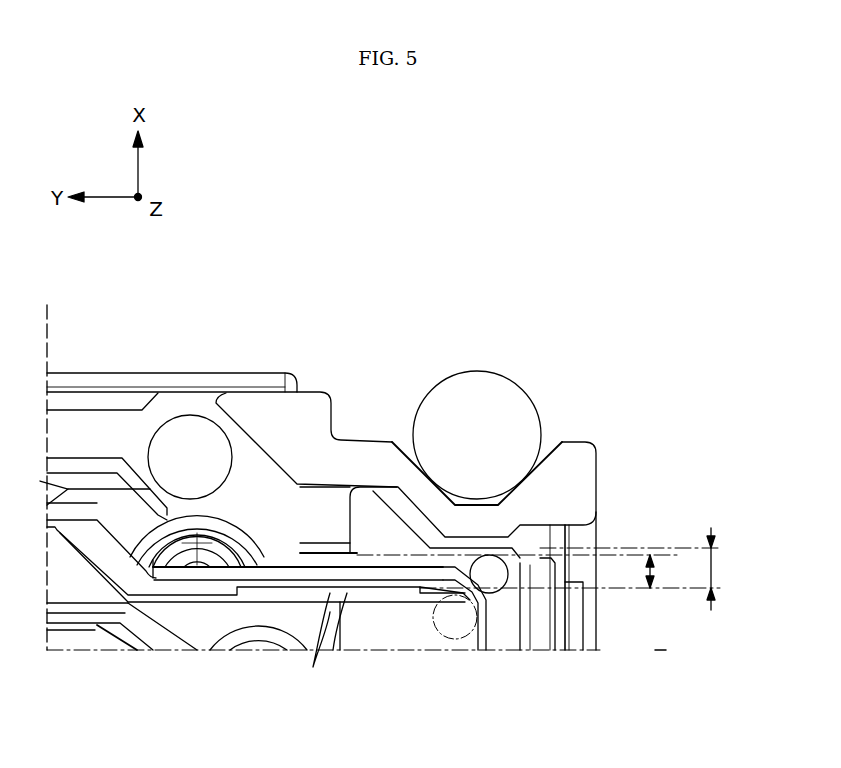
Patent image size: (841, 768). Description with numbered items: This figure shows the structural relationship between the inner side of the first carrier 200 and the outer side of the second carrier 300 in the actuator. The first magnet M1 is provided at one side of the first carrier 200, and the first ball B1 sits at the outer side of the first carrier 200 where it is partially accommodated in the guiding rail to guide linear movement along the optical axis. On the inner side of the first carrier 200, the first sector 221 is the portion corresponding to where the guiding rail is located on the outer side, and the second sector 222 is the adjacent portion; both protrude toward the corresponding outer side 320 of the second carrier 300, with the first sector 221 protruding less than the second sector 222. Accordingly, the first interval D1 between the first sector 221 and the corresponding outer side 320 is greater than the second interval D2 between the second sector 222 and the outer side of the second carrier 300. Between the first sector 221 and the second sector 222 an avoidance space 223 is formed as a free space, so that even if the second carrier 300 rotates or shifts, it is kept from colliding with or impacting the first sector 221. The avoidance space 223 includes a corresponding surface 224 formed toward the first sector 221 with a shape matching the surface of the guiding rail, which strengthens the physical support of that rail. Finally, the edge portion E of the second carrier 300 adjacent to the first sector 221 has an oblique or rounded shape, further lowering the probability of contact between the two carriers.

The first carrier 200 is at (112, 425).
The first magnet M1 is at (203, 378).
The second sector 222 is at (313, 550).
The avoidance space 223 is at (360, 522).
The corresponding surface 224 is at (403, 520).
The first ball B1 is at (477, 390).
The first sector 221 is at (483, 522).
The first interval D1 is at (726, 569).
The second interval D2 is at (666, 571).
The second carrier 300 is at (195, 627).
The corresponding outer side 320 is at (300, 590).
The edge portion E is at (470, 640).